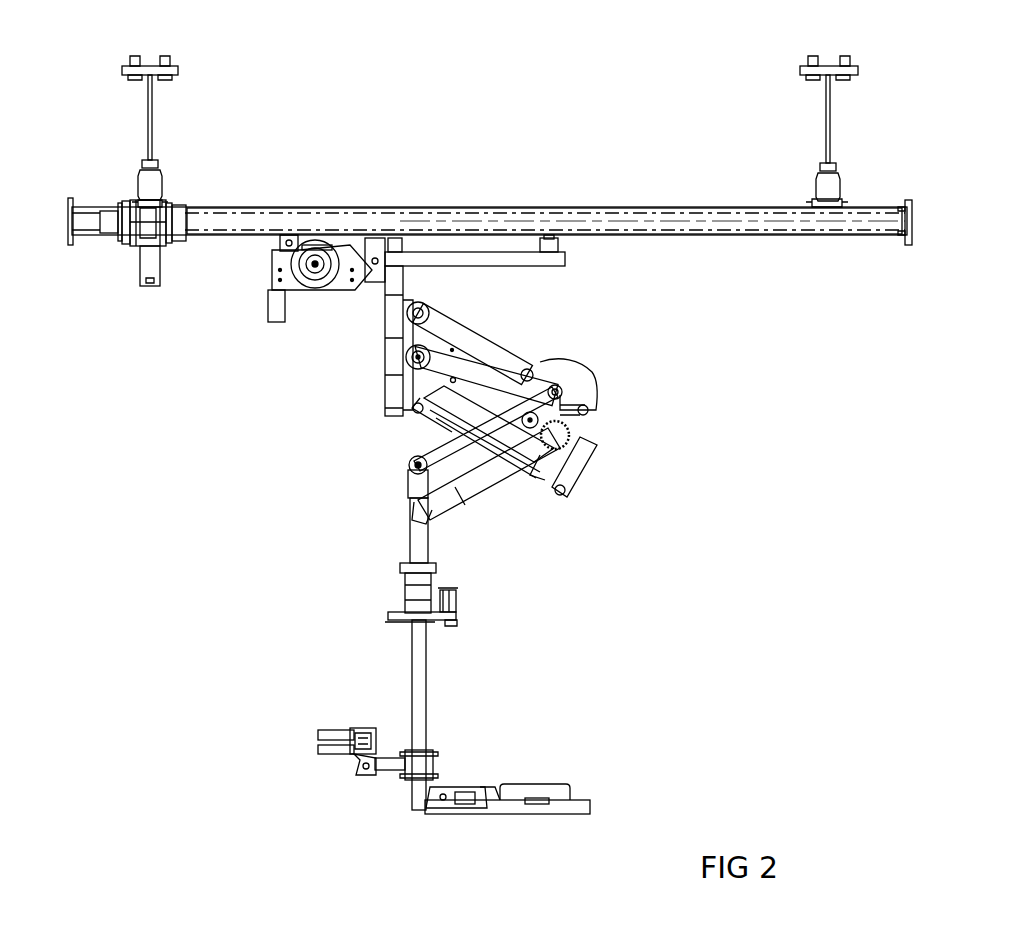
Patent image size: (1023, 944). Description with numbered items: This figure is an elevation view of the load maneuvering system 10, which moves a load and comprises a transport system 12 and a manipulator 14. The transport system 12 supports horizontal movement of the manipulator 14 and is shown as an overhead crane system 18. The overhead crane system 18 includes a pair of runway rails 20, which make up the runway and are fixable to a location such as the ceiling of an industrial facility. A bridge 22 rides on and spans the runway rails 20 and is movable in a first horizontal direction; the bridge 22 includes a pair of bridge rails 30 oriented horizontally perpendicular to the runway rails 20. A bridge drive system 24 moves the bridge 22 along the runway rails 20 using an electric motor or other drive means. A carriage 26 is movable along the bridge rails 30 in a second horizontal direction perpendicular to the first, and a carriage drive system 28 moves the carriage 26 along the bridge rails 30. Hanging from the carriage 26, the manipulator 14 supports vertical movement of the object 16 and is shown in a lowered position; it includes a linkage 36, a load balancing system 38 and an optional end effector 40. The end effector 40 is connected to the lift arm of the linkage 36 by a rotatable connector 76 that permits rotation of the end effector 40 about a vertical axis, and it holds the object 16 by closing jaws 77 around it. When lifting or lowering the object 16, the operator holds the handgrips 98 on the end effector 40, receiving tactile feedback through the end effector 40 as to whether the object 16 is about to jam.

The load maneuvering system 10 is at (719, 77).
The transport system 12 is at (904, 184).
The overhead crane system 18 is at (544, 221).
The manipulator 14 is at (694, 391).
The object 16 is at (560, 780).
The runway rails 20 is at (160, 178).
The bridge 22 is at (912, 232).
The bridge drive system 24 is at (118, 250).
The carriage 26 is at (565, 261).
The carriage drive system 28 is at (290, 268).
The bridge rails 30 is at (752, 242).
The linkage 36 is at (540, 345).
The load balancing system 38 is at (418, 430).
The end effector 40 is at (378, 700).
The rotatable connector 76 is at (395, 615).
The jaws 77 is at (515, 800).
The handgrips 98 is at (318, 736).